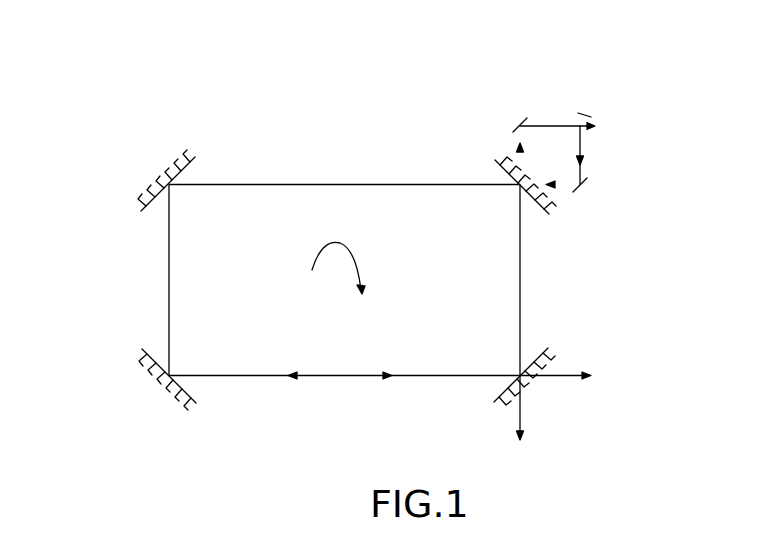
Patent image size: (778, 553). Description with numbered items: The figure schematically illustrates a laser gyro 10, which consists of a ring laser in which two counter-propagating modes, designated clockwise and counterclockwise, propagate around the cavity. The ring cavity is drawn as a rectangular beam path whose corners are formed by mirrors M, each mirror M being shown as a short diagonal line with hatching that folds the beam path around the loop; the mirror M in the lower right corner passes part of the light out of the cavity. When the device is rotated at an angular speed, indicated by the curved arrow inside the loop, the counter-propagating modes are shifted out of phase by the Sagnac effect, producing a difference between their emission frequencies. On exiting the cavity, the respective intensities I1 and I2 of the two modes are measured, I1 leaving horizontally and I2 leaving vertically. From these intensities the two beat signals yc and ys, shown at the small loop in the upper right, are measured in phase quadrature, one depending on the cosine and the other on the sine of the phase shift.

The laser gyro 10 is at (219, 90).
The mirror M is at (145, 160).
The beat signal yc is at (605, 138).
The intensity of the first mode I1 is at (565, 377).
The intensity of the second mode I2 is at (518, 426).